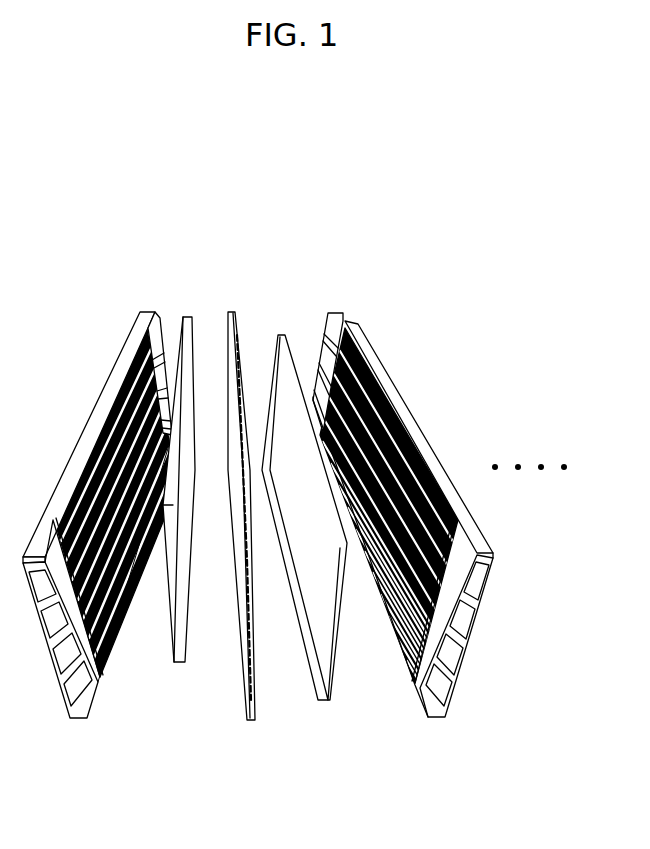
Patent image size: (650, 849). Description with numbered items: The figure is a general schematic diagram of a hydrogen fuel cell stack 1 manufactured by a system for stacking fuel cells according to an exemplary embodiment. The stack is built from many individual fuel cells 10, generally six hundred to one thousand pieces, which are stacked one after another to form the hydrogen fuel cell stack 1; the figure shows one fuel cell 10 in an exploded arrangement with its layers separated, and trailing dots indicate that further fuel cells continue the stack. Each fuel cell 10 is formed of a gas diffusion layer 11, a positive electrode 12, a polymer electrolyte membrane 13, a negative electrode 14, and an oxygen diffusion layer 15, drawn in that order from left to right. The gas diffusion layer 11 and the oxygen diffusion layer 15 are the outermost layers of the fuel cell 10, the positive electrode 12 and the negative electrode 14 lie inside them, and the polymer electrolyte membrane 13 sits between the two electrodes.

The hydrogen fuel cell stack 1 is at (86, 188).
The fuel cell 10 is at (160, 284).
The gas diffusion layer 11 is at (108, 372).
The positive electrode 12 is at (184, 314).
The polymer electrolyte membrane 13 is at (231, 310).
The negative electrode 14 is at (279, 334).
The oxygen diffusion layer 15 is at (341, 313).